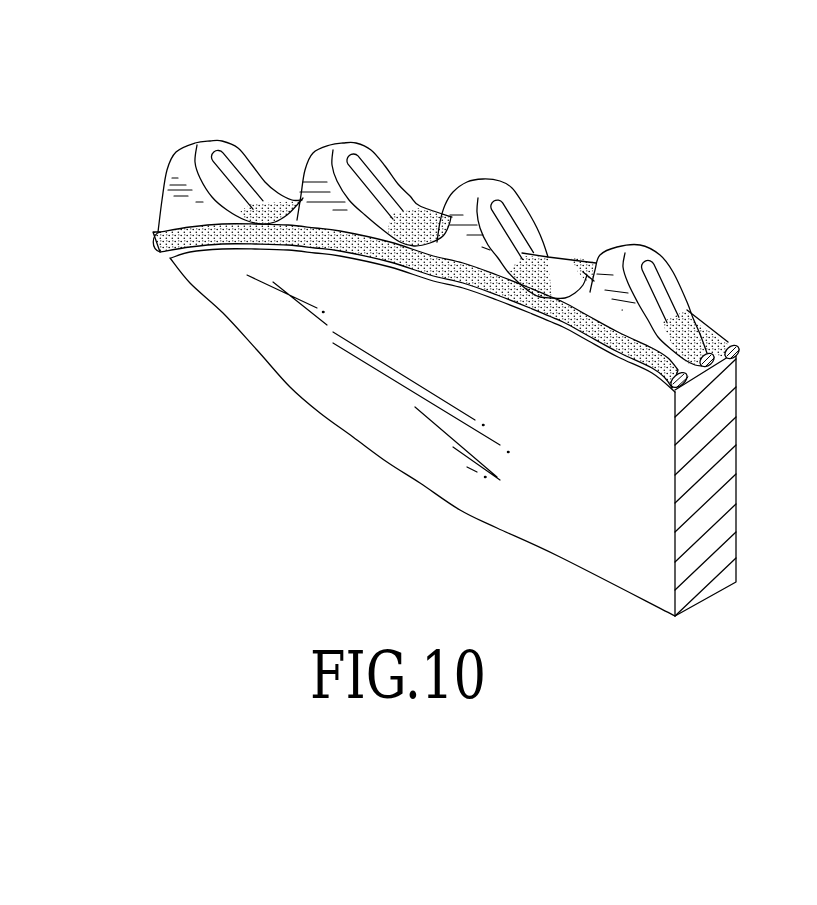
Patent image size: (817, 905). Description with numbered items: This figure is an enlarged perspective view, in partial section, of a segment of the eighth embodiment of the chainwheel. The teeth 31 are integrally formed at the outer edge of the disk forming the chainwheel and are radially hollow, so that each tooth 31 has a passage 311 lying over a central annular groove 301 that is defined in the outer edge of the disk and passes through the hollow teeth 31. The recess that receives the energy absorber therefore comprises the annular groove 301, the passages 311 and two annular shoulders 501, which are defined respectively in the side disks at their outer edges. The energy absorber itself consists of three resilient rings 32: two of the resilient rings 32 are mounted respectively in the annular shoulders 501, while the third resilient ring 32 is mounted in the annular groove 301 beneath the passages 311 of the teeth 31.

The teeth 31 is at (463, 207).
The passage 311 is at (658, 284).
The resilient ring 32 is at (537, 263).
The annular groove 301 is at (714, 365).
The annular shoulder 501 is at (736, 348).